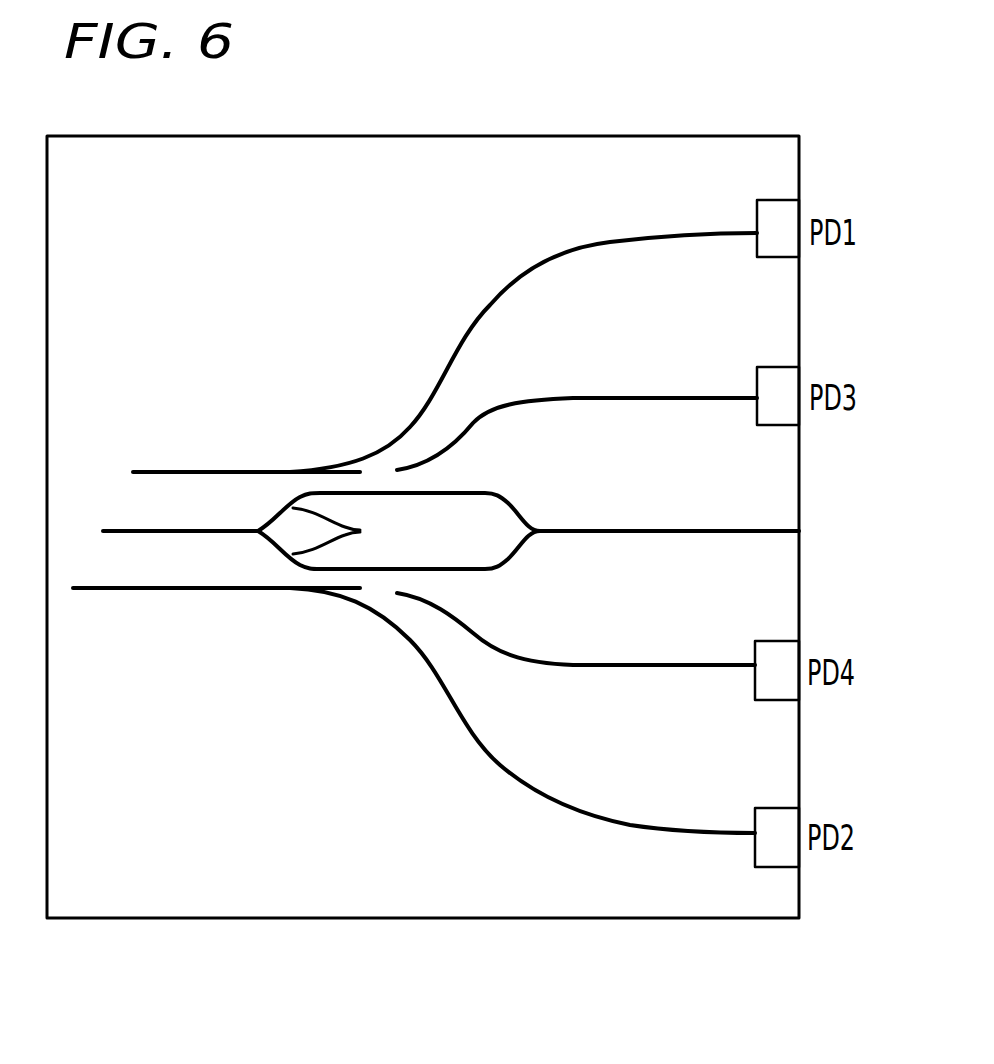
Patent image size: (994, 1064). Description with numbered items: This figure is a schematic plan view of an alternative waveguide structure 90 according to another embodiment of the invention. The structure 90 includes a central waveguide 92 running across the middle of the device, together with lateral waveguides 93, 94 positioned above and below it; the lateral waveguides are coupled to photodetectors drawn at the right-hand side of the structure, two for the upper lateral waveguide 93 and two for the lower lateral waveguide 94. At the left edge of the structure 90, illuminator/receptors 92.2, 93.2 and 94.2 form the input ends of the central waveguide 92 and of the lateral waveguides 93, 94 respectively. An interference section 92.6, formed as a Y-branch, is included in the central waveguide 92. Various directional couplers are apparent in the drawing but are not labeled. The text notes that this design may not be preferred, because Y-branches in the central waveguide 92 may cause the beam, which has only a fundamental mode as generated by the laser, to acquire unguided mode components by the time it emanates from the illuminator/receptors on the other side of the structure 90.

The waveguide structure 90 is at (304, 330).
The central waveguide 92 is at (451, 518).
The illuminator/receptor 92.2 is at (158, 531).
The interference section 92.6 is at (358, 531).
The lateral waveguide 93 is at (445, 352).
The illuminator/receptor 93.2 is at (180, 472).
The lateral waveguide 94 is at (414, 710).
The illuminator/receptor 94.2 is at (180, 596).